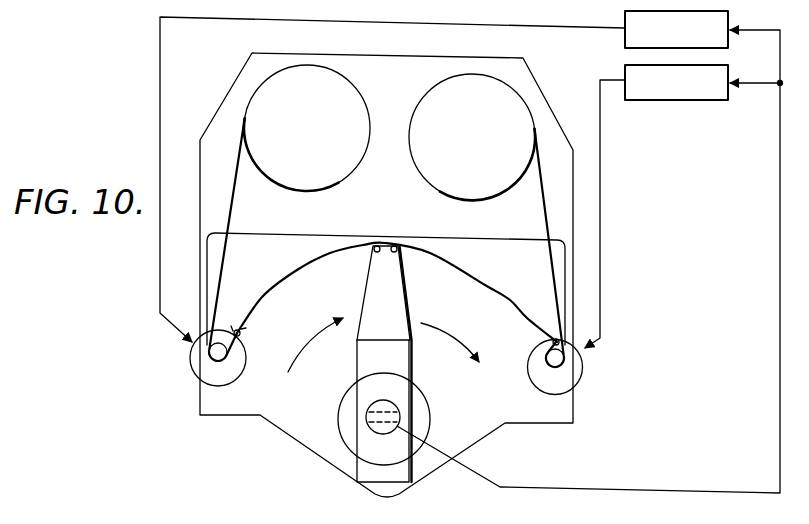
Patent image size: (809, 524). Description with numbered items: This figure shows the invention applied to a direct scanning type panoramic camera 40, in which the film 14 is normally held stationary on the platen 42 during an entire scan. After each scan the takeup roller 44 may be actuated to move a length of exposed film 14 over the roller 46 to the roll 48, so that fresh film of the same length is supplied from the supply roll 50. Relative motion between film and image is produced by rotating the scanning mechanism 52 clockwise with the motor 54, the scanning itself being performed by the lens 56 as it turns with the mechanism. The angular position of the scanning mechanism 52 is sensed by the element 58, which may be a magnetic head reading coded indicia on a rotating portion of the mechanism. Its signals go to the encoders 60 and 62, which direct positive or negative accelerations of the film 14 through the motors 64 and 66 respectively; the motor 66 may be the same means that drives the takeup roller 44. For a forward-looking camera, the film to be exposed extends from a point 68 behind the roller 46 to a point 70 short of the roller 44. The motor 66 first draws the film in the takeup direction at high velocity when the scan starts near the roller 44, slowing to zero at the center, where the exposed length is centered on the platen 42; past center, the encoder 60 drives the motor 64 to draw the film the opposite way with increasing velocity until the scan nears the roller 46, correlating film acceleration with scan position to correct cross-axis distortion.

The film 14 is at (484, 283).
The direct scanning type panoramic camera 40 is at (285, 447).
The platen 42 is at (280, 233).
The takeup roller 44 is at (229, 352).
The roller 46 is at (550, 365).
The roll 48 is at (357, 92).
The supply roll 50 is at (437, 192).
The scanning mechanism 52 is at (391, 374).
The motor 54 is at (429, 415).
The lens 56 is at (398, 404).
The element 58 is at (386, 434).
The encoder 60 is at (672, 100).
The encoder 62 is at (625, 40).
The motor 64 is at (583, 370).
The motor 66 is at (191, 366).
The point 68 is at (553, 342).
The point 70 is at (240, 333).